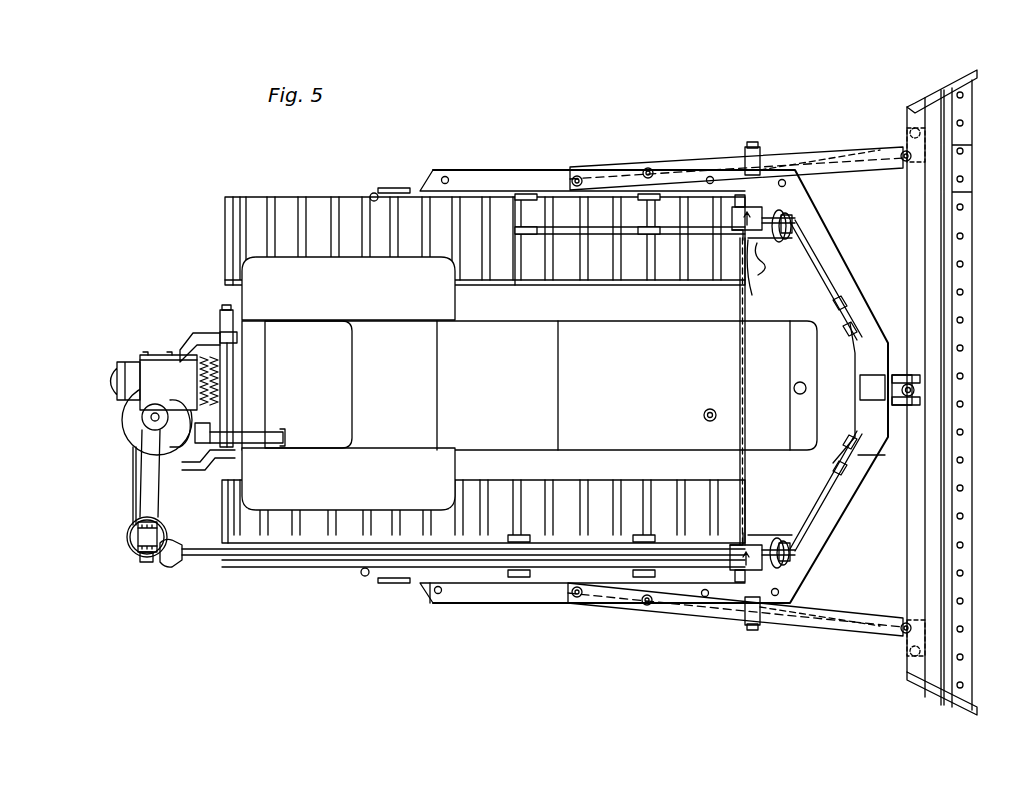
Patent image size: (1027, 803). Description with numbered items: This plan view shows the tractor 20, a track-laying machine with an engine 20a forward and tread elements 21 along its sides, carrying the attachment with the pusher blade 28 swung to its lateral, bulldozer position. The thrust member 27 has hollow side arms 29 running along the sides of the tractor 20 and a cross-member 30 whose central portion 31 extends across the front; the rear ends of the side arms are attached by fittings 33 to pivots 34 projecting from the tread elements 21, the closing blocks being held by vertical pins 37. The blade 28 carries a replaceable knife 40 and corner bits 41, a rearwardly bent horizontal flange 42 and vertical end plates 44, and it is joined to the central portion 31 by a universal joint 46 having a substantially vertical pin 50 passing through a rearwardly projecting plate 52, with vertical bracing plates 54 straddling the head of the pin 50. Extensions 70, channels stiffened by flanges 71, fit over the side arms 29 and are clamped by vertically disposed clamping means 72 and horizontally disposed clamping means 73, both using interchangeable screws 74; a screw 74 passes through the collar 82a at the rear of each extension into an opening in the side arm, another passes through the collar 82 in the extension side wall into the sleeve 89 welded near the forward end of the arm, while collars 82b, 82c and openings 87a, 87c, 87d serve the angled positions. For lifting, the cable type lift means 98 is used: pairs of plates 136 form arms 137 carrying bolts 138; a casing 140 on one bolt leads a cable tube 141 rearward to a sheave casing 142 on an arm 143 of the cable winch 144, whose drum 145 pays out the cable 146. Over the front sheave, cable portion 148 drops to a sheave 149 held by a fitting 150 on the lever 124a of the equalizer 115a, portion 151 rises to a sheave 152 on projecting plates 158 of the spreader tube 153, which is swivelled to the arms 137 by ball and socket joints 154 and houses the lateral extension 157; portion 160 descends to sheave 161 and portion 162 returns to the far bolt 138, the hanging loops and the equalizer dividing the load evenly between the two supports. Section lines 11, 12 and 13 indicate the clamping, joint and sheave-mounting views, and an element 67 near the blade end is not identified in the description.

The section line 11- 11 is at (747, 590).
The section line 12- 12 is at (753, 150).
The section line 13- 13 is at (737, 520).
The tractor 20 is at (216, 310).
The engine 20a is at (653, 351).
The tread elements 21 is at (256, 220).
The thrust member 27 is at (892, 419).
The pusher blade 28 is at (950, 250).
The side arms 29 is at (518, 592).
The cross-member 30 is at (880, 327).
The central portion 31 is at (862, 440).
The fittings 33 is at (423, 187).
The pivots 34 is at (396, 188).
The vertical pins 37 is at (373, 193).
The knife 40 is at (955, 360).
The corner bits 41 is at (964, 125).
The horizontal flange 42 is at (935, 185).
The end plates 44 is at (945, 90).
The universal joint 46 is at (885, 400).
The vertical pin 50 is at (915, 390).
The plate 52 is at (915, 270).
The bracing plates 54 is at (910, 375).
The hinge 67 is at (915, 127).
The extensions 70 is at (826, 160).
The flanges 71 is at (856, 165).
The clamping means 72 is at (581, 171).
The clamping means 73 is at (740, 145).
The screw 74 is at (760, 150).
The collar 82 is at (745, 146).
The collar 82a is at (574, 178).
The collar 82b is at (648, 167).
The collar 82c is at (902, 151).
The opening 87a is at (447, 177).
The opening 87c is at (708, 176).
The opening 87d is at (786, 183).
The sleeve 89 is at (775, 172).
The cable type lifting device 98 is at (779, 521).
The equalizer 115a is at (841, 378).
The lever 124a is at (818, 273).
The plates 136 is at (583, 212).
The arms 137 is at (700, 231).
The bolt 138 is at (735, 222).
The casing 140 is at (712, 562).
The cable tube 141 is at (318, 556).
The sheave casing 142 is at (155, 562).
The arm 143 is at (145, 478).
The cable winch 144 is at (121, 416).
The cable drum 145 is at (127, 428).
The cable 146 is at (130, 503).
The cable portion 148 is at (790, 562).
The sheave 149 is at (790, 555).
The fitting 150 is at (778, 225).
The cable portion 151 is at (790, 525).
The sheave 152 is at (750, 500).
The connecting tube 153 is at (740, 388).
The ball and socket joints 154 is at (798, 232).
The lateral extension 157 is at (740, 360).
The projecting plates 158 is at (760, 258).
The cable portion 160 is at (757, 252).
The sheave 161 is at (750, 242).
The cable portion 162 is at (778, 212).